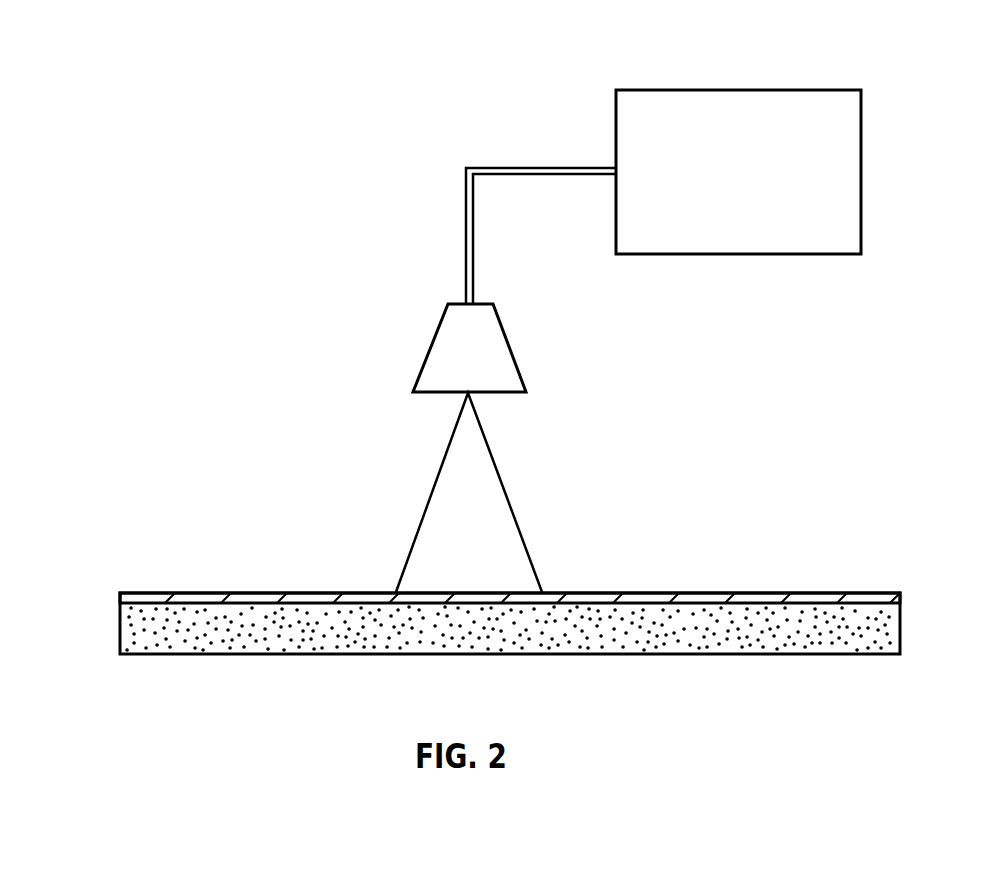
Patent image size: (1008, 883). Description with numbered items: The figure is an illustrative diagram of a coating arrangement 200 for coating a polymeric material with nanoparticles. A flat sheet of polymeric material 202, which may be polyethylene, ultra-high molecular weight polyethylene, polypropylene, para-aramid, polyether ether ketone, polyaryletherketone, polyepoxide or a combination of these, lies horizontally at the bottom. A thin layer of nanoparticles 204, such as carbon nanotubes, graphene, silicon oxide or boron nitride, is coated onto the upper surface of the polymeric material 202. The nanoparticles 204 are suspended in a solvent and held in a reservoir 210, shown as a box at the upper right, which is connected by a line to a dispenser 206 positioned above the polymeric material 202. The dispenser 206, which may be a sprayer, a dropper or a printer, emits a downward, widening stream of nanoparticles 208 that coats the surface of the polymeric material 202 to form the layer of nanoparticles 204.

The system 200 is at (288, 139).
The polymeric material 202 is at (132, 633).
The nanoparticles 204 is at (125, 600).
The dispenser 206 is at (430, 350).
The stream of nanoparticles 208 is at (495, 553).
The reservoir 210 is at (762, 198).